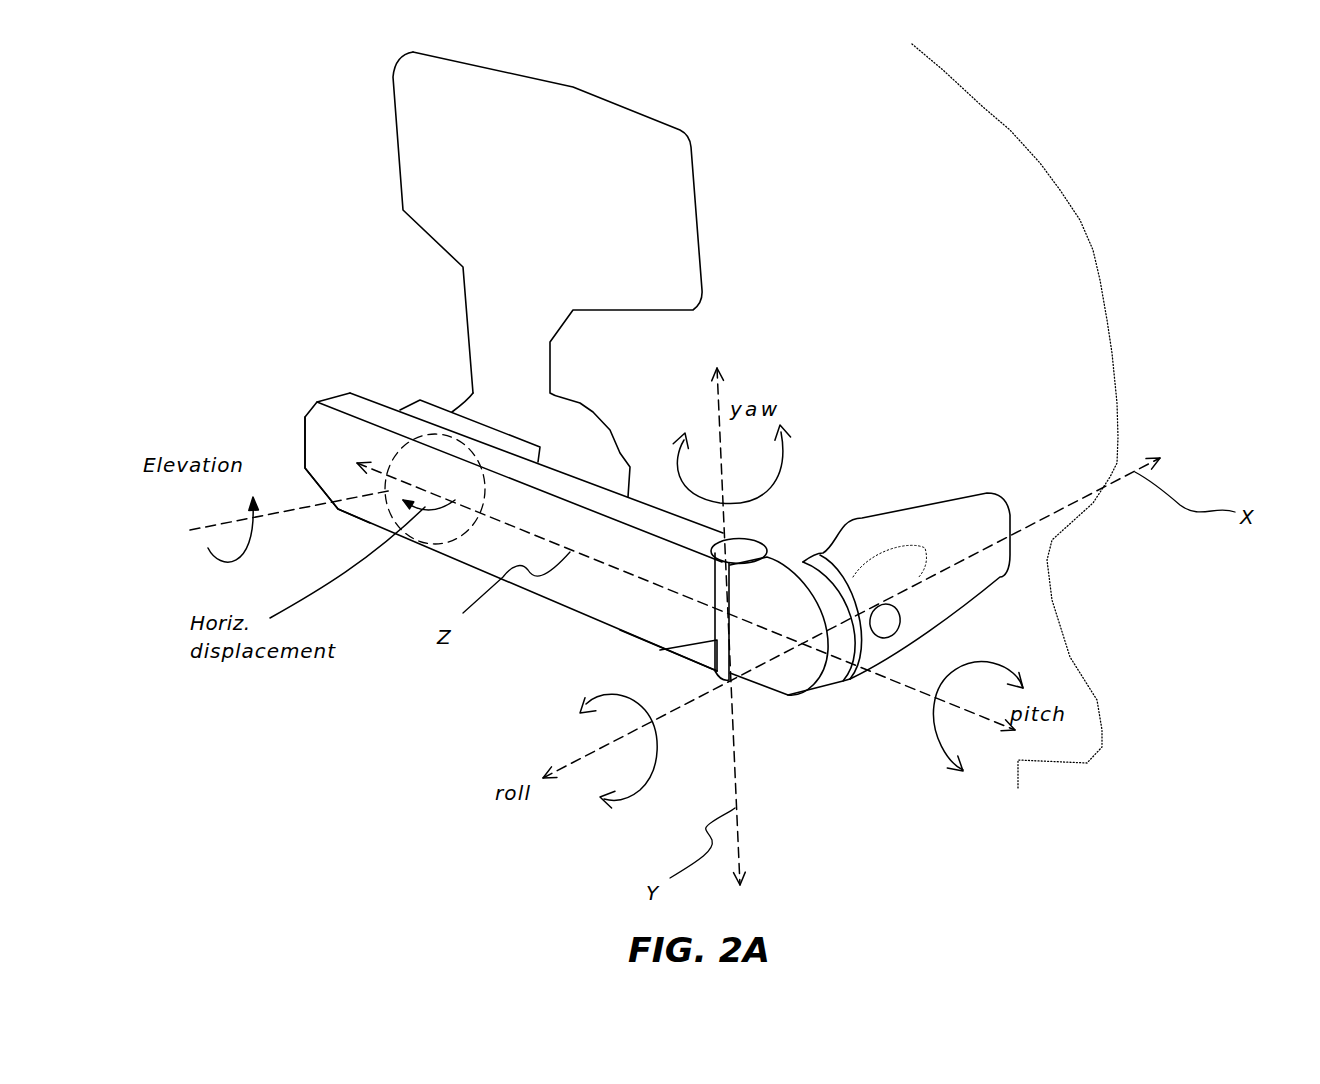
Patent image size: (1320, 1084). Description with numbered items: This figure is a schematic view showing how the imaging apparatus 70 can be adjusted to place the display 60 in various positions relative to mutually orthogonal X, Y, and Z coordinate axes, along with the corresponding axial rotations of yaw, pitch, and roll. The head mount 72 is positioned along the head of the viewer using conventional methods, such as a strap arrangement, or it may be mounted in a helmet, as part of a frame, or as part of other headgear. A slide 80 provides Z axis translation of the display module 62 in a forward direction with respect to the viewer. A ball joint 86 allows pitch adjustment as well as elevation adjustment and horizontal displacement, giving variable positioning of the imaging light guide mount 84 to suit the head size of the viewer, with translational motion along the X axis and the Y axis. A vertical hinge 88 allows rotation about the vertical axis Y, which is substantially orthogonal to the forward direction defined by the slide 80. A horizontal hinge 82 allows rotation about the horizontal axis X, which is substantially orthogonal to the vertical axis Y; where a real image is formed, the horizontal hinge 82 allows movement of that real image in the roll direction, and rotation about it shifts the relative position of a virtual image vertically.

The display 60 is at (1003, 562).
The display module 62 is at (453, 558).
The imaging apparatus 70 is at (1130, 98).
The head mount 72 is at (319, 149).
The slide 80 is at (400, 408).
The horizontal hinge 82 is at (845, 680).
The imaging light guide mount 84 is at (825, 728).
The ball joint 86 is at (393, 517).
The vertical hinge 88 is at (660, 650).